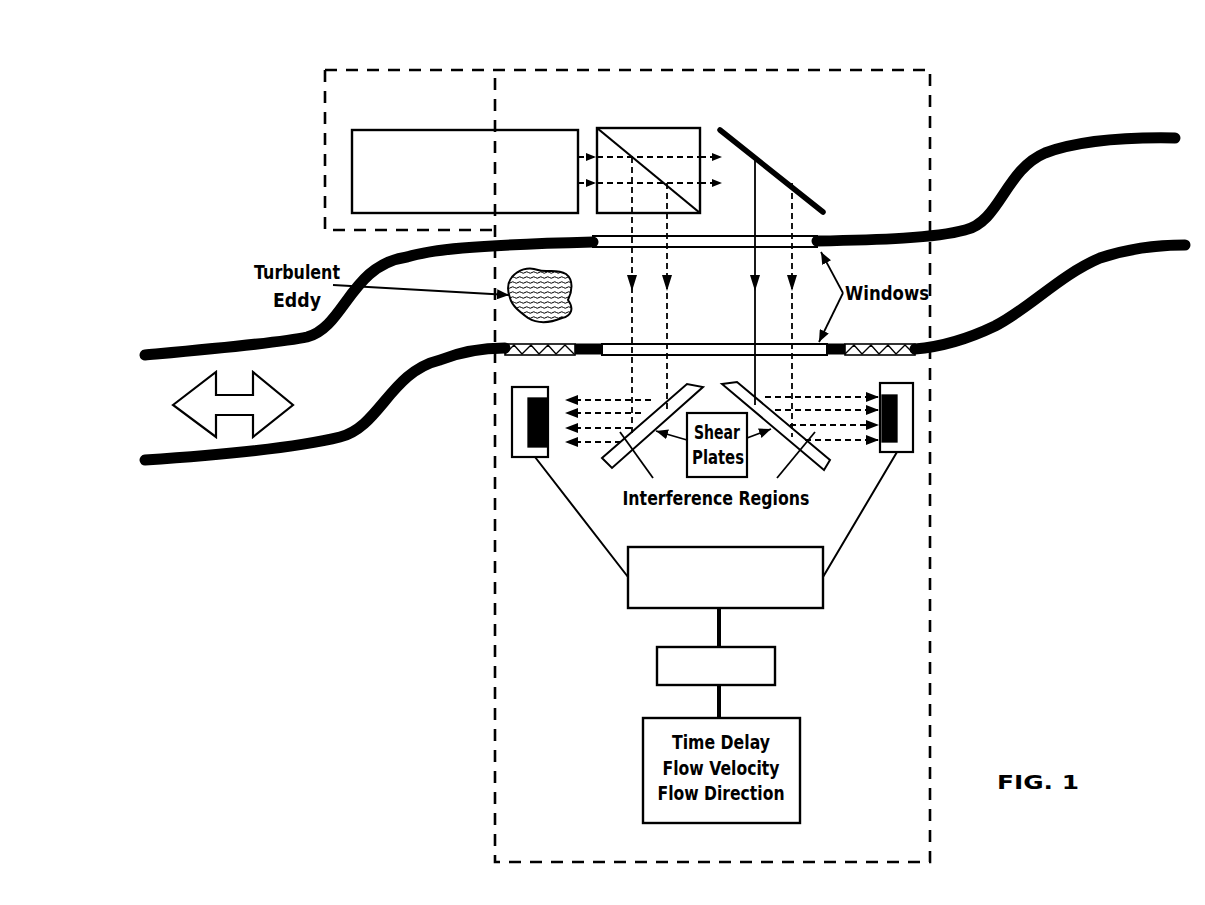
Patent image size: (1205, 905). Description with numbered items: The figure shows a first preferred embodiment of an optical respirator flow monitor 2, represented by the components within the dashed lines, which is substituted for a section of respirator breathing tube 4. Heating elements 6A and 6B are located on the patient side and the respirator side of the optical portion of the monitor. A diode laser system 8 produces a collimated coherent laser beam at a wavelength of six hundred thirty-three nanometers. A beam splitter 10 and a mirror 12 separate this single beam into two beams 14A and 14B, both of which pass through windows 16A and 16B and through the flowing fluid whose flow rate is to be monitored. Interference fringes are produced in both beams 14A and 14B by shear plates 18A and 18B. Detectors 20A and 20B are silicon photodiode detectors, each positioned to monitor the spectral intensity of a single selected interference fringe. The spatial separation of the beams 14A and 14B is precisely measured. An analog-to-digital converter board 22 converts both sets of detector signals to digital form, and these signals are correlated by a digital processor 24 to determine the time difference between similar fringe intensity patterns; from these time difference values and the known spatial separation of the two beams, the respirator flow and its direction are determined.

The optical respirator flow monitor 2 is at (942, 573).
The respirator breathing tube 4 is at (1080, 287).
The heating element 6A is at (503, 366).
The heating element 6B is at (912, 358).
The diode laser system 8 is at (352, 153).
The beam splitter 10 is at (700, 150).
The mirror 12 is at (810, 196).
The beam 14A is at (670, 297).
The beam 14B is at (734, 297).
The window 16A is at (803, 234).
The window 16B is at (726, 363).
The shear plate 18A is at (608, 463).
The shear plate 18B is at (823, 463).
The detector 20A is at (511, 449).
The detector 20B is at (915, 428).
The analog-to-digital converter board 22 is at (823, 580).
The digital processor 24 is at (775, 664).